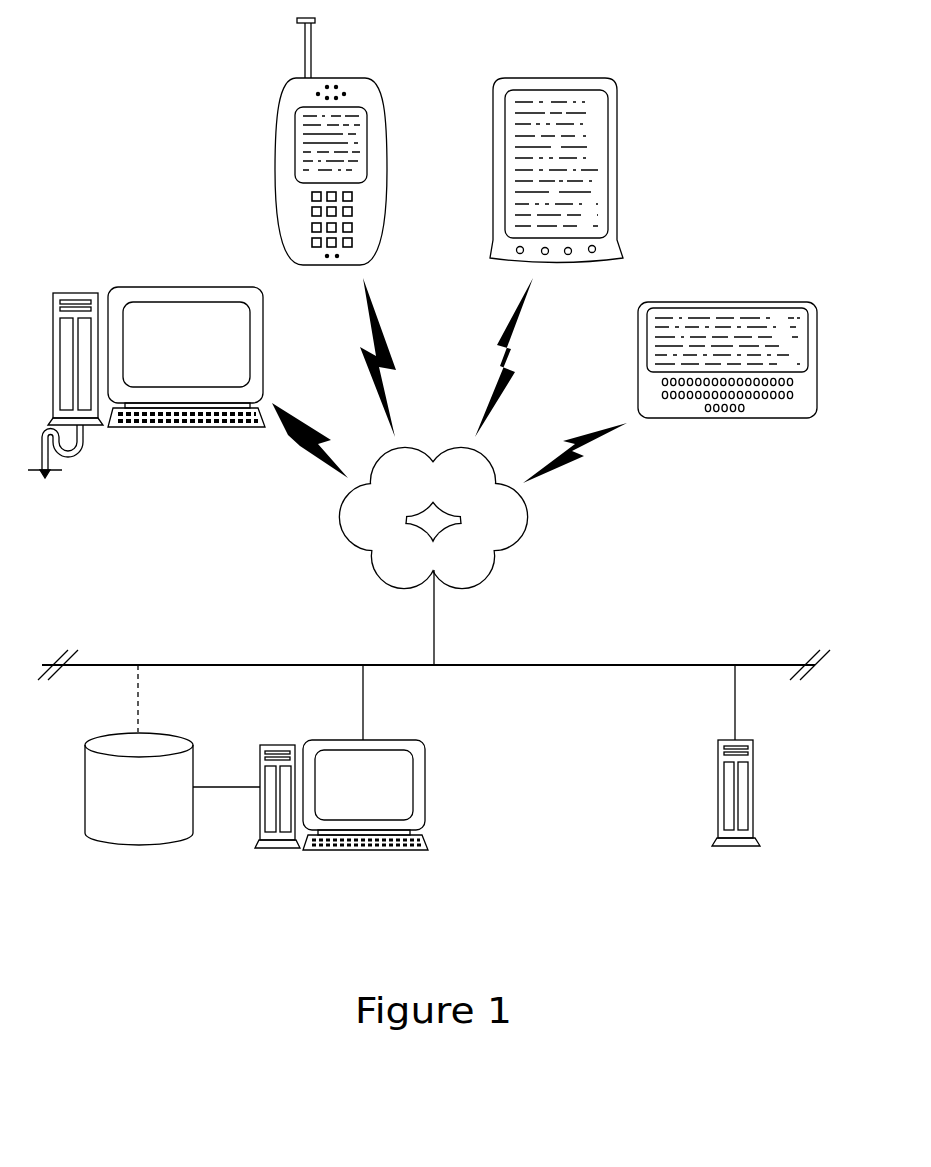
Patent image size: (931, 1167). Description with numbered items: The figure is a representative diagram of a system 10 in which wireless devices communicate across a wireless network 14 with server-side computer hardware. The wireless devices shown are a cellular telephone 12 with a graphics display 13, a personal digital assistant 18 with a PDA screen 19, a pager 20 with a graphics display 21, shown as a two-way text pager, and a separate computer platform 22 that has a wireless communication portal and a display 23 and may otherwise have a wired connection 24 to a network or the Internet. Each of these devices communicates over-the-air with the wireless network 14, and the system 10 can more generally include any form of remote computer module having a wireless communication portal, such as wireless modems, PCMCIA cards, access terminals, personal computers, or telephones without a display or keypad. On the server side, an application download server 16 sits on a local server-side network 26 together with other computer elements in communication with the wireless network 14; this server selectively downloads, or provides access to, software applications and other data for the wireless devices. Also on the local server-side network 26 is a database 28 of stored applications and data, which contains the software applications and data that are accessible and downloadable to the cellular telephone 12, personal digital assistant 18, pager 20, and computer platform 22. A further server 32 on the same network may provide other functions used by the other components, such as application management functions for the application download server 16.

The system 10 is at (732, 152).
The cellular telephone 12 is at (333, 141).
The graphics display 13 is at (296, 146).
The wireless network 14 is at (527, 517).
The application download server 16 is at (340, 738).
The personal digital assistant 18 is at (535, 151).
The PDA screen 19 is at (506, 147).
The pager 20 is at (727, 356).
The graphics display 21 is at (724, 320).
The computer platform 22 is at (156, 332).
The display 23 is at (148, 308).
The wired connection 24 is at (89, 460).
The local server-side network 26 is at (630, 665).
The database 28 is at (85, 788).
The server 32 is at (755, 770).